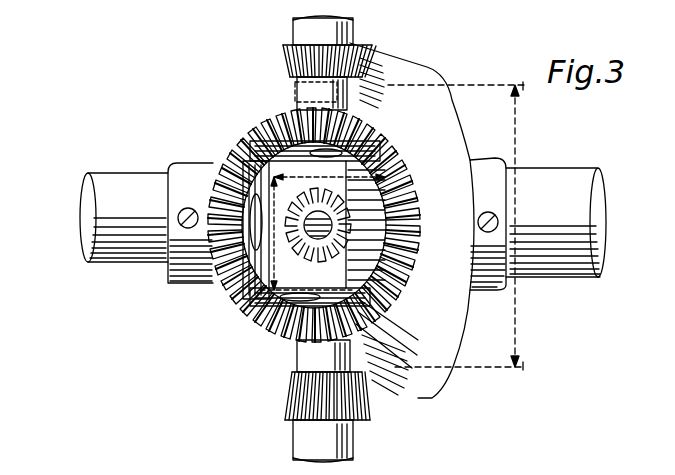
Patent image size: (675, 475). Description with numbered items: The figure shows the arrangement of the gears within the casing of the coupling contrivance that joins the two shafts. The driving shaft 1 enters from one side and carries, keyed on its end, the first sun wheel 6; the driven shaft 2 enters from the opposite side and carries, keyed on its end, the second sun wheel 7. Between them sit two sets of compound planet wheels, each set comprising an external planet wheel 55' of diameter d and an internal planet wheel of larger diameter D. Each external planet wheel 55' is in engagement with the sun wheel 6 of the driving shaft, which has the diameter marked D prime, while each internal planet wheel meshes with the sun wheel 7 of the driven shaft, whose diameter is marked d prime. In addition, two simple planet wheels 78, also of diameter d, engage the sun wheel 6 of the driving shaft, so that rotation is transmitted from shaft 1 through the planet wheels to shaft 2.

The driving shaft 1 is at (570, 177).
The driven shaft 2 is at (123, 183).
The first sun wheel 6 is at (422, 85).
The second sun wheel 7 is at (215, 145).
The external planet wheel 55' is at (326, 239).
The simple planet wheel 78 is at (290, 237).